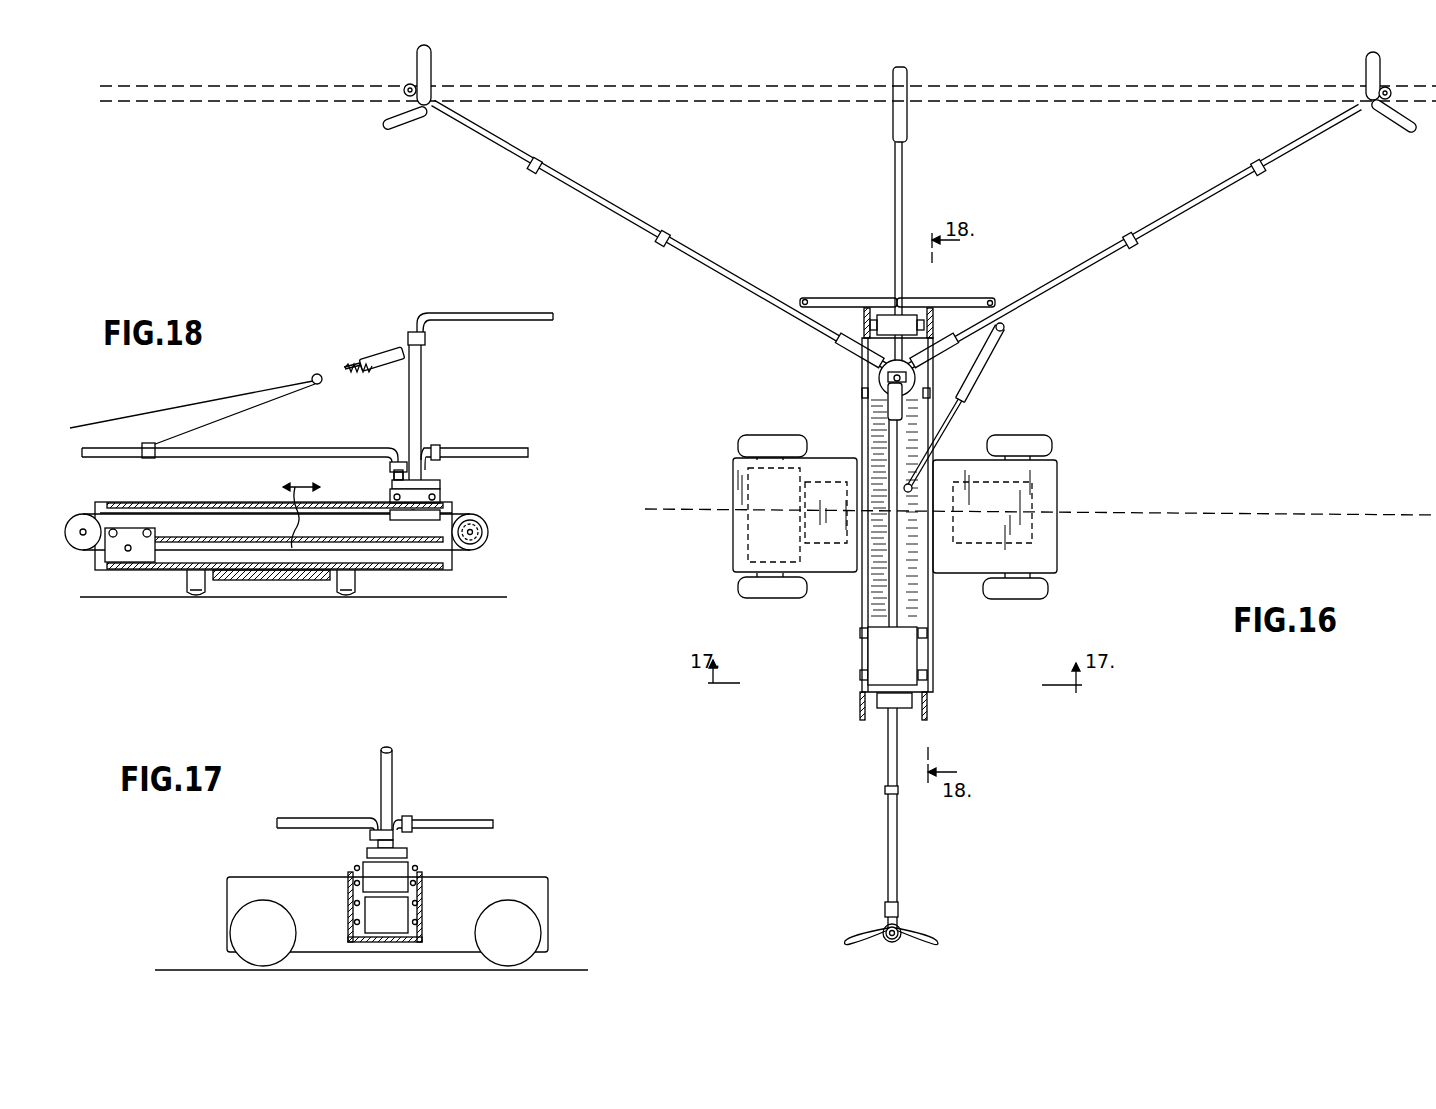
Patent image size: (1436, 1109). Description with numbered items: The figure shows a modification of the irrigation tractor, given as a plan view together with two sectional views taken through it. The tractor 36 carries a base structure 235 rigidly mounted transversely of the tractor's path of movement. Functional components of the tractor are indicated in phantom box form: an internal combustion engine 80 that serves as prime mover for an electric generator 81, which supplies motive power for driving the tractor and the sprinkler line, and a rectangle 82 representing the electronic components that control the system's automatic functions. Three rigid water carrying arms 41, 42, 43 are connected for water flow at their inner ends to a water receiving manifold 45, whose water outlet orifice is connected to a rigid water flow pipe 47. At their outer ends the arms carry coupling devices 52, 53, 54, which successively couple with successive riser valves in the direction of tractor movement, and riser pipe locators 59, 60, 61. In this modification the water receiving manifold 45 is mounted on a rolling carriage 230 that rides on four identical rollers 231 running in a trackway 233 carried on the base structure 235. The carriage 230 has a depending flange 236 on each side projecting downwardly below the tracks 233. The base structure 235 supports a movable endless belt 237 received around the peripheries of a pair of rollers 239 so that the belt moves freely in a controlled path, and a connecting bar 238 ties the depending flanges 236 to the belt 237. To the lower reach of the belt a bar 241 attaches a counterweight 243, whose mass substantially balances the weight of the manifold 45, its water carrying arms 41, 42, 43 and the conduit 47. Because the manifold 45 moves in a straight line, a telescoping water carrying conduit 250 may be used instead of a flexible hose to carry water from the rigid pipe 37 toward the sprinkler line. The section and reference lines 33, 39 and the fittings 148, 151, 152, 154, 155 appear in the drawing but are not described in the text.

In FIG. 16, the reference line / string line 33 is at (1135, 93).
In FIG. 16, the tractor 36 is at (733, 552).
In FIG. 17, the tractor 36 is at (550, 907).
In FIG. 16, the rigid pipe 37 is at (750, 440).
In FIG. 18, the rigid pipe 37 is at (198, 595).
In FIG. 17, the rigid pipe 37 is at (265, 955).
In FIG. 16, the center line 39 is at (680, 512).
In FIG. 16, the water carrying arm 41 is at (1113, 252).
In FIG. 18, the water carrying arm 41 is at (460, 450).
In FIG. 17, the water carrying arm 41 is at (463, 818).
In FIG. 16, the water carrying arm 42 is at (645, 222).
In FIG. 17, the water carrying arm 42 is at (313, 818).
In FIG. 16, the water carrying arm 43 is at (898, 845).
In FIG. 18, the water carrying arm 43 is at (300, 450).
In FIG. 16, the water receiving manifold 45 is at (910, 375).
In FIG. 18, the water receiving manifold 45 is at (443, 478).
In FIG. 17, the water receiving manifold 45 is at (414, 850).
In FIG. 18, the water flow pipe 47 is at (422, 400).
In FIG. 17, the water flow pipe 47 is at (393, 795).
In FIG. 16, the coupling device 52 is at (1393, 83).
In FIG. 16, the coupling device 53 is at (407, 73).
In FIG. 16, the coupling device 54 is at (885, 948).
In FIG. 16, the riser pipe locator 59 is at (1400, 128).
In FIG. 16, the riser pipe locator 60 is at (387, 120).
In FIG. 16, the riser pipe locator 61 is at (920, 938).
In FIG. 16, the internal combustion engine 80 is at (745, 505).
In FIG. 18, the internal combustion engine 80 is at (290, 582).
In FIG. 16, the electric generator 81 is at (820, 475).
In FIG. 16, the electronic components 82 is at (1022, 508).
In FIG. 18, the elbow fitting 148 is at (417, 312).
In FIG. 16, the right cross bar 151 is at (958, 298).
In FIG. 16, the left cross bar 152 is at (836, 298).
In FIG. 16, the hydraulic cylinder 154 is at (990, 355).
In FIG. 16, the cylinder rod 155 is at (945, 425).
In FIG. 16, the rolling carriage 230 is at (879, 378).
In FIG. 18, the rolling carriage 230 is at (395, 485).
In FIG. 17, the rolling carriage 230 is at (375, 868).
In FIG. 16, the rollers 231 is at (862, 393).
In FIG. 18, the rollers 231 is at (442, 494).
In FIG. 17, the rollers 231 is at (348, 893).
In FIG. 16, the trackway 233 is at (861, 588).
In FIG. 18, the trackway 233 is at (180, 503).
In FIG. 18, the base structure 235 is at (457, 568).
In FIG. 18, the depending flange 236 is at (430, 522).
In FIG. 16, the endless belt 237 is at (887, 318).
In FIG. 18, the endless belt 237 is at (475, 514).
In FIG. 18, the connecting bar 238 is at (410, 515).
In FIG. 18, the rollers 239 is at (80, 522).
In FIG. 18, the bar 241 is at (128, 552).
In FIG. 16, the counterweight 243 is at (915, 665).
In FIG. 18, the counterweight 243 is at (116, 562).
In FIG. 17, the counterweight 243 is at (393, 910).
In FIG. 16, the telescoping water carrying conduit 250 is at (905, 185).
In FIG. 18, the telescoping water carrying conduit 250 is at (468, 313).